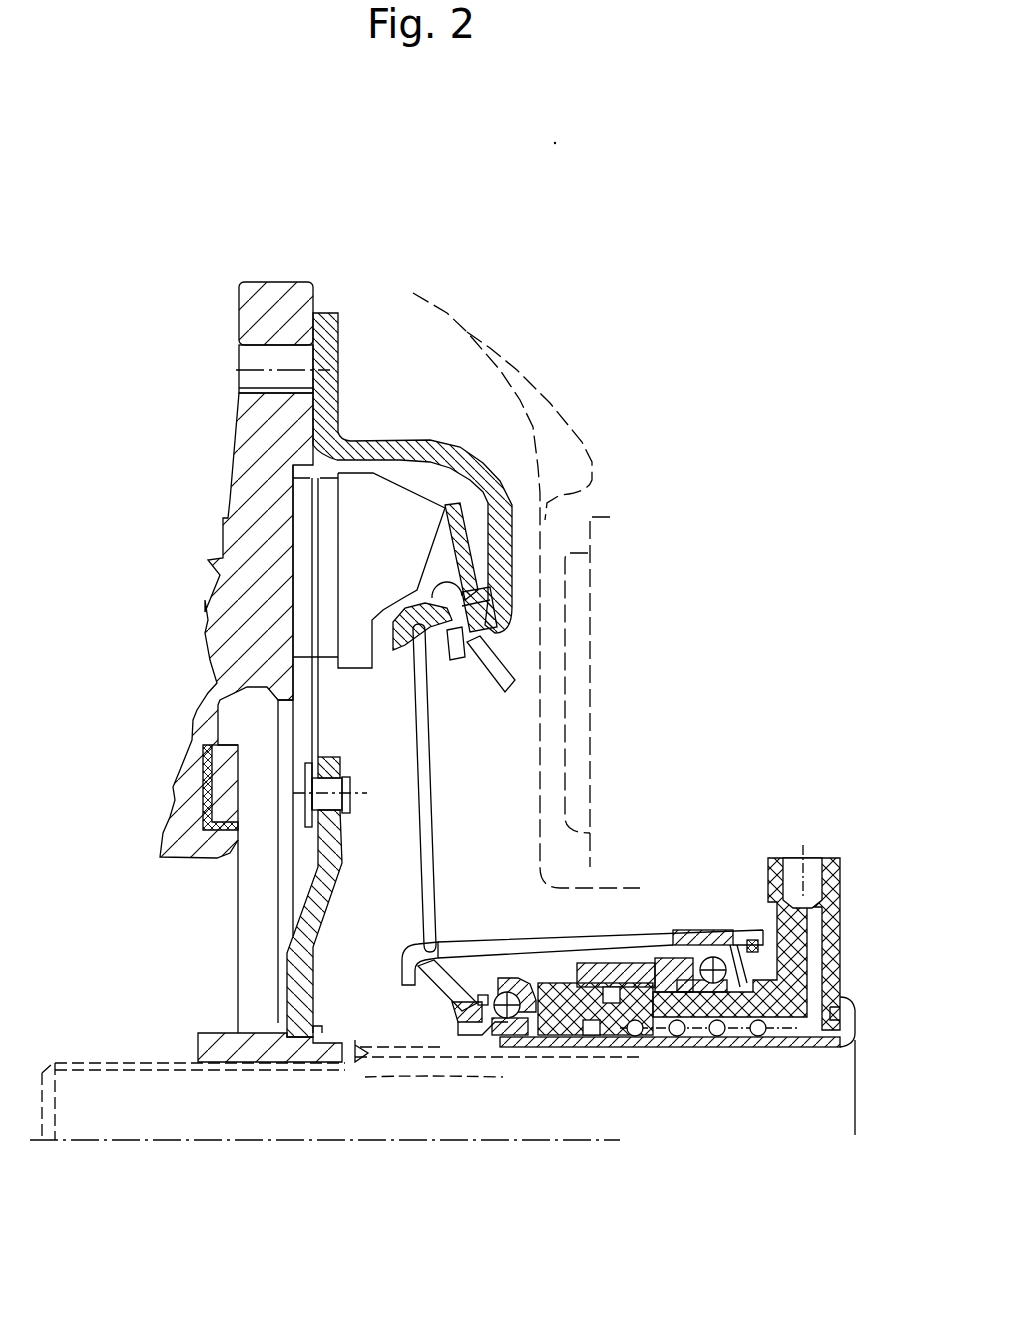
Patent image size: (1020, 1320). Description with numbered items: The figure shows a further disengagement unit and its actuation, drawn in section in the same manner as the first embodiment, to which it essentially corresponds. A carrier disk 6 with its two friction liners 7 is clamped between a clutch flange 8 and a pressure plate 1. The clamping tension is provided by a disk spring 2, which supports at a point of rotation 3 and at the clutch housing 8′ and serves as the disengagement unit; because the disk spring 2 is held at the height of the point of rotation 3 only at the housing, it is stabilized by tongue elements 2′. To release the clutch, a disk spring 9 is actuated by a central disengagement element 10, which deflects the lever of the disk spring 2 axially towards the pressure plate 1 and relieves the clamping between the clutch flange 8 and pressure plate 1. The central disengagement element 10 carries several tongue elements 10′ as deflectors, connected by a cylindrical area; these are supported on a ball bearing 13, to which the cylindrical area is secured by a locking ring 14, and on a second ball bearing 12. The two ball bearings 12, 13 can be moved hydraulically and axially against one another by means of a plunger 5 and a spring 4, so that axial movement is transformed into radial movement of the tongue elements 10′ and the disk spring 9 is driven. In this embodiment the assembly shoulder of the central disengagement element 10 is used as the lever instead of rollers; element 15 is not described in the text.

The pressure plate 1 is at (370, 526).
The disk spring 2 is at (460, 522).
The tongue elements 2′ is at (503, 678).
The point of rotation 3 is at (482, 614).
The spring 4 is at (740, 1047).
The plunger 5 is at (643, 1047).
The carrier disk 6 is at (313, 570).
The friction liners 7 is at (300, 542).
The clutch flange 8 is at (274, 316).
The clutch housing 8′ is at (478, 462).
The disk spring 9 is at (422, 752).
The central disengagement element 10 is at (497, 1098).
The tongue elements 10′ is at (427, 952).
The ball bearing 12 is at (512, 1000).
The ball bearing 13 is at (718, 960).
The locking ring 14 is at (753, 945).
The release bearing carrier 15 is at (447, 987).